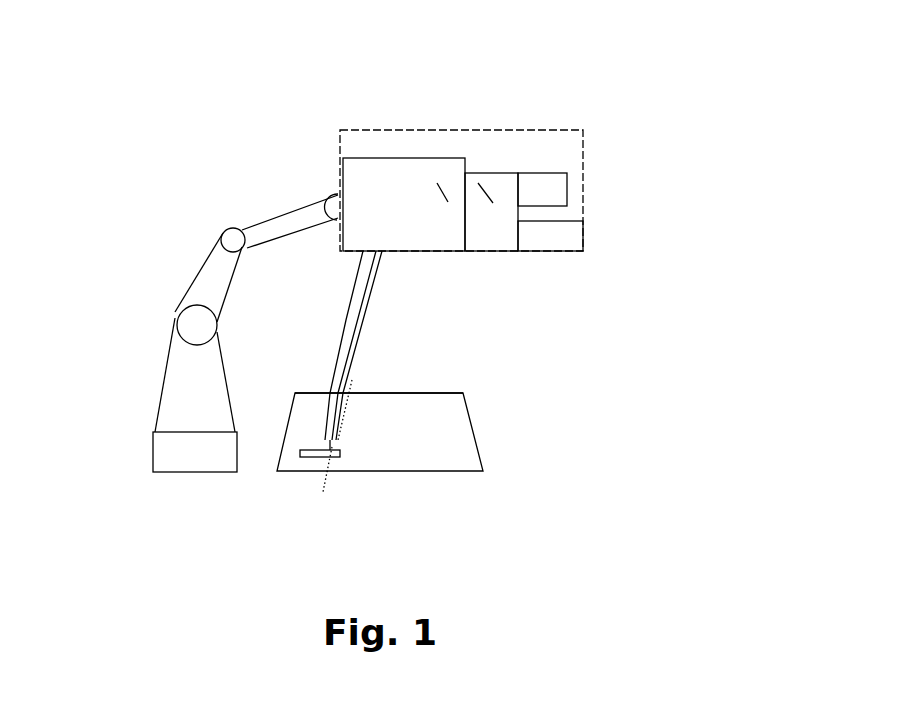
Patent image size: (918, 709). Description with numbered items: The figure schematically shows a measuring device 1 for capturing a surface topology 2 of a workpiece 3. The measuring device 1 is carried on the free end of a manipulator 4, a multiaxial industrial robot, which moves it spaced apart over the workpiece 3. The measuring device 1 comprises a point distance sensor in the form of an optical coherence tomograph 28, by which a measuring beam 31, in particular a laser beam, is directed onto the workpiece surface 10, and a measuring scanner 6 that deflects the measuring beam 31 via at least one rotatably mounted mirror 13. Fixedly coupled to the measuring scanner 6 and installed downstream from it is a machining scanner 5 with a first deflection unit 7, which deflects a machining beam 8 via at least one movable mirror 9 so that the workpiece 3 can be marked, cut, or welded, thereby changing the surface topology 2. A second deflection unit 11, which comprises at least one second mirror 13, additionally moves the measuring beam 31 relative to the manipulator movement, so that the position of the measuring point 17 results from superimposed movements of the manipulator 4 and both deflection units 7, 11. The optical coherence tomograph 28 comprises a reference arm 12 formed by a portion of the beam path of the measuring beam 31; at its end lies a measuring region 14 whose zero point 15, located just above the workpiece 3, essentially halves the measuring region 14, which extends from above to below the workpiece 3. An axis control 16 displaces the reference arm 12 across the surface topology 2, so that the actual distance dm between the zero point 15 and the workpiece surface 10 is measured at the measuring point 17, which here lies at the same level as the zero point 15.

The measuring device 1 is at (461, 190).
The surface topology 2 is at (312, 503).
The workpiece 3 is at (422, 432).
The manipulator 4 is at (220, 333).
The machining scanner 5 is at (404, 204).
The measuring scanner 6 is at (491, 212).
The first deflection unit 7 is at (391, 110).
The machining beam 8 is at (312, 345).
The movable mirror 9 is at (365, 202).
The workpiece surface 10 is at (445, 407).
The second deflection unit 11 is at (526, 267).
The reference arm 12 is at (392, 371).
The mirror 13 is at (494, 260).
The measuring region 14 is at (351, 519).
The zero point 15 is at (360, 424).
The axis control 16 is at (550, 236).
The measuring point 17 is at (376, 525).
The optical coherence tomograph 28 is at (542, 189).
The measuring beam 31 is at (363, 303).
The actual distance dm is at (287, 405).